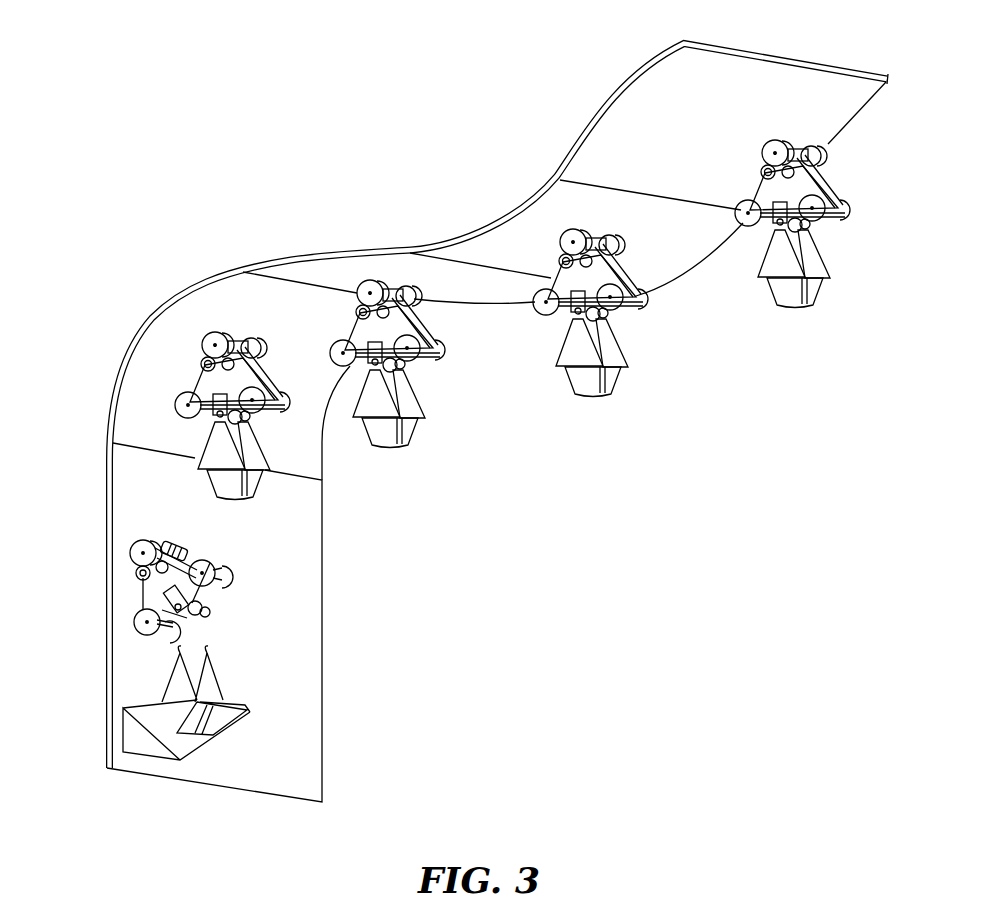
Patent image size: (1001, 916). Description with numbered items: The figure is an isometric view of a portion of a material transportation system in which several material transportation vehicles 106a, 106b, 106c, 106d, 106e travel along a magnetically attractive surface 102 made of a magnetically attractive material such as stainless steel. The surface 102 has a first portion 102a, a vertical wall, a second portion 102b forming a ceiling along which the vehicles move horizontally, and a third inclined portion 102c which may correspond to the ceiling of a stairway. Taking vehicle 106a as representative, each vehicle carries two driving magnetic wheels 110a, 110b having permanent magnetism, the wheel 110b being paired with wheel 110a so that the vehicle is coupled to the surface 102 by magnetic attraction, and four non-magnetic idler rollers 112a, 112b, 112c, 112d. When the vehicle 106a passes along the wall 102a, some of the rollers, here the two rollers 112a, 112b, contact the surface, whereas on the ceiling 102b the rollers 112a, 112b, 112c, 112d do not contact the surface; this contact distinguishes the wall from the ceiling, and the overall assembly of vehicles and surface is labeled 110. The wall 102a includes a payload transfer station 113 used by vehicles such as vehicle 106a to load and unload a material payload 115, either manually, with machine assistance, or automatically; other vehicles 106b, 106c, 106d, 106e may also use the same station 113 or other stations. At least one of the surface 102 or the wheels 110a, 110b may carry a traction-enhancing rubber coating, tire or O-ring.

The magnetically attractive surface 102 is at (850, 103).
The first portion of the magnetically attractive surface 102a is at (100, 447).
The second portion of the magnetically attractive surface 102b is at (390, 249).
The third inclined portion of the magnetically attractive surface 102c is at (553, 167).
The material transportation vehicle 106a is at (168, 532).
The material transportation vehicle 106b is at (202, 382).
The material transportation vehicle 106c is at (353, 328).
The material transportation vehicle 106d is at (558, 277).
The material transportation vehicle 106e is at (757, 193).
The conveyor system 110 is at (266, 96).
The driving magnetic wheel 110a is at (135, 543).
The driving magnetic wheel 110b is at (182, 545).
The idler roller 112a is at (146, 637).
The idler roller 112b is at (181, 632).
The idler roller 112c is at (206, 564).
The idler roller 112d is at (237, 569).
The payload transfer station 113 is at (250, 713).
The material payload 115 is at (170, 730).